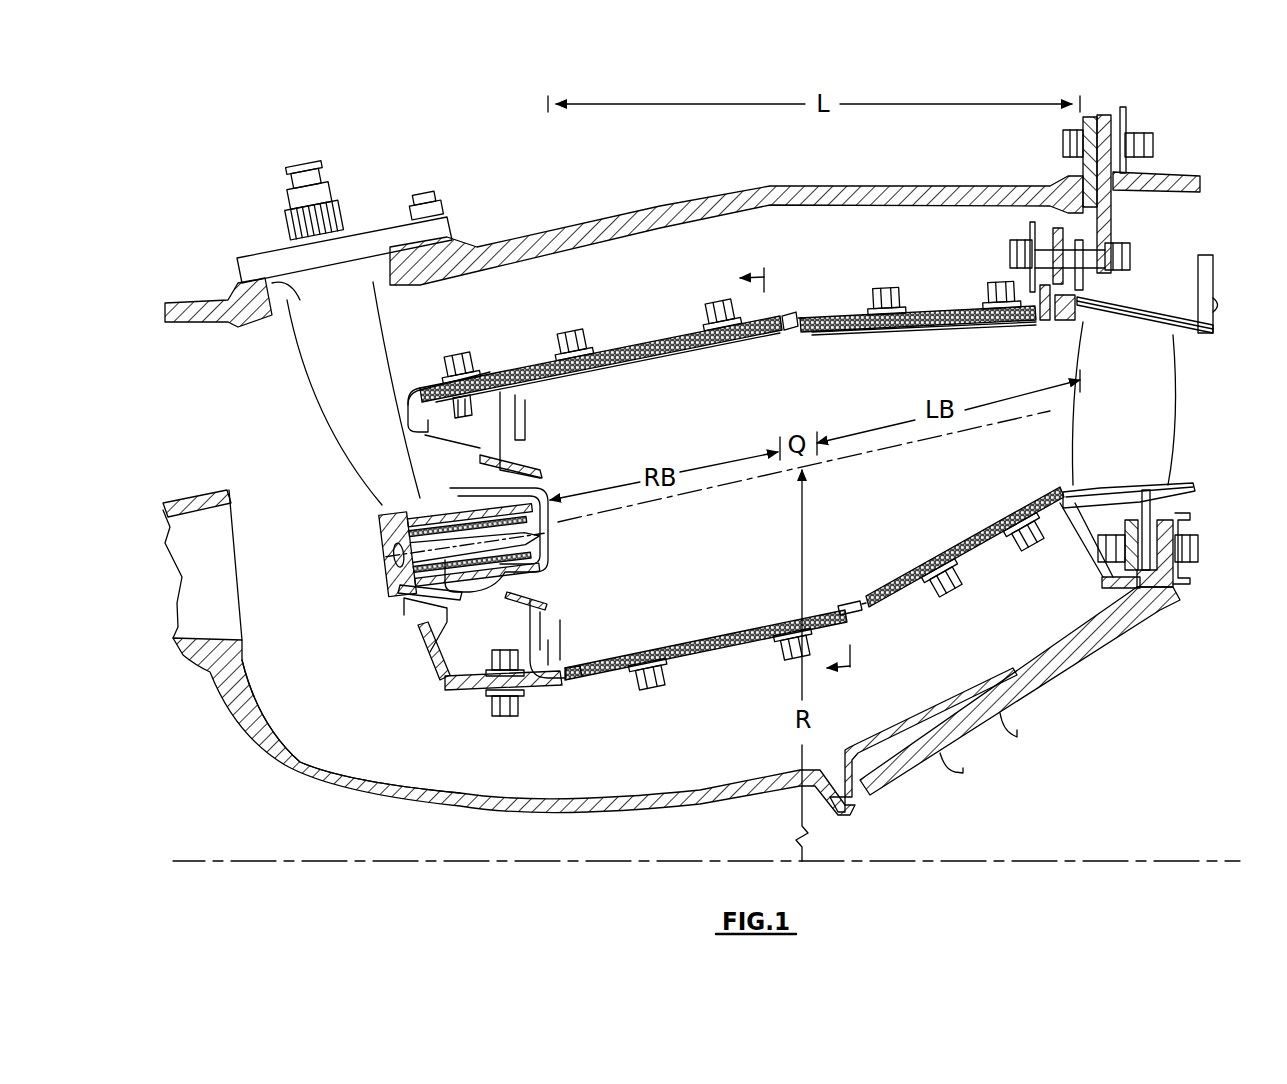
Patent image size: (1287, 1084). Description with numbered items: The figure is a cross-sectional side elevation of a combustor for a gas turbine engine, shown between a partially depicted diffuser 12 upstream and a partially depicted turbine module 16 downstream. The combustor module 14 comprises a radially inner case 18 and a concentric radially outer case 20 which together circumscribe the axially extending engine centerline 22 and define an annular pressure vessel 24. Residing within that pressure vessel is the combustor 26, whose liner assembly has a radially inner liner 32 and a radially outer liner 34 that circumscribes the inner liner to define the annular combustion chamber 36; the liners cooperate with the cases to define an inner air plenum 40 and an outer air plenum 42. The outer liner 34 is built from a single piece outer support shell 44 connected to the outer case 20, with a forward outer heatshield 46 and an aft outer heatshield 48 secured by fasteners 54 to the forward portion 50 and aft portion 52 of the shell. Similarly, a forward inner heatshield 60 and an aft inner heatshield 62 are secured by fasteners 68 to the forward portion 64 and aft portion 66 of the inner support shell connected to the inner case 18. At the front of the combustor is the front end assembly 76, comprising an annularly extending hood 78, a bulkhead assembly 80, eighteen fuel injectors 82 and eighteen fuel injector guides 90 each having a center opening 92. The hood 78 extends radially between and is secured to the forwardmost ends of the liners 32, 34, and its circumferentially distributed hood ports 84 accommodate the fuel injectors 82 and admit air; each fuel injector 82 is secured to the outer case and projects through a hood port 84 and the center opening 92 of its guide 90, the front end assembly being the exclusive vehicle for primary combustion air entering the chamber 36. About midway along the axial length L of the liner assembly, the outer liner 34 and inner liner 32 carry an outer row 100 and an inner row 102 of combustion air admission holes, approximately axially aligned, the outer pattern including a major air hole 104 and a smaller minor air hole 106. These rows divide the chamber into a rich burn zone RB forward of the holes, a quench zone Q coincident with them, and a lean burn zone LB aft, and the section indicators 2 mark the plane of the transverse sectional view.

The section line 2- 2 is at (805, 475).
The diffuser 12 is at (232, 632).
The combustor module 14 is at (260, 766).
The turbine module 16 is at (1197, 226).
The radially inner case 18 is at (710, 800).
The radially outer case 20 is at (940, 195).
The engine centerline 22 is at (1125, 861).
The annular pressure vessel 24 is at (347, 748).
The combustor 26 is at (593, 720).
The radially inner liner 32 is at (760, 652).
The radially outer liner 34 is at (815, 300).
The annular combustion chamber 36 is at (690, 423).
The inner air plenum 40 is at (695, 758).
The outer air plenum 42 is at (643, 270).
The outer support shell 44 is at (930, 315).
The forward outer heatshield 46 is at (630, 360).
The aft outer heatshield 48 is at (925, 326).
The forward portion of outer support shell 50 is at (598, 350).
The aft portion of outer support shell 52 is at (870, 305).
The fasteners 54 is at (557, 350).
The forward inner heatshield 60 is at (683, 635).
The aft inner heatshield 62 is at (983, 530).
The forward portion of inner support shell 64 is at (668, 660).
The aft portion of inner support shell 66 is at (958, 565).
The fasteners 68 is at (1027, 557).
The front end assembly 76 is at (573, 537).
The hood 78 is at (422, 655).
The bulkhead assembly 80 is at (572, 605).
The fuel injector 82 is at (358, 475).
The hood port 84 is at (425, 615).
The fuel injector guide 90 is at (500, 472).
The center opening 92 is at (545, 482).
The outer row of combustion air admission holes 100 is at (803, 333).
The inner row of combustion air admission holes 102 is at (855, 580).
The major air hole 104 is at (785, 337).
The minor air hole 106 is at (840, 600).